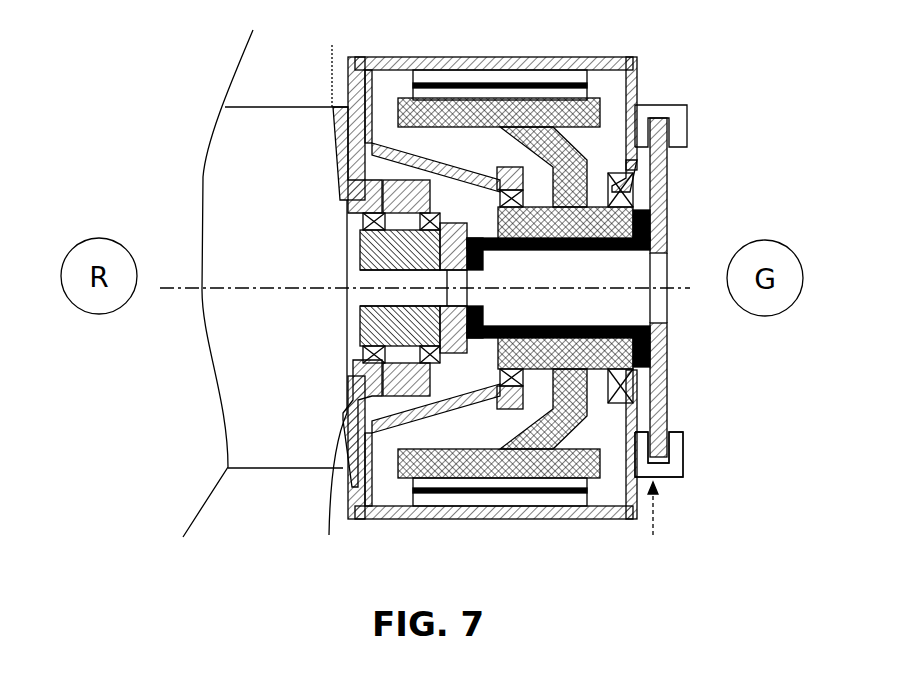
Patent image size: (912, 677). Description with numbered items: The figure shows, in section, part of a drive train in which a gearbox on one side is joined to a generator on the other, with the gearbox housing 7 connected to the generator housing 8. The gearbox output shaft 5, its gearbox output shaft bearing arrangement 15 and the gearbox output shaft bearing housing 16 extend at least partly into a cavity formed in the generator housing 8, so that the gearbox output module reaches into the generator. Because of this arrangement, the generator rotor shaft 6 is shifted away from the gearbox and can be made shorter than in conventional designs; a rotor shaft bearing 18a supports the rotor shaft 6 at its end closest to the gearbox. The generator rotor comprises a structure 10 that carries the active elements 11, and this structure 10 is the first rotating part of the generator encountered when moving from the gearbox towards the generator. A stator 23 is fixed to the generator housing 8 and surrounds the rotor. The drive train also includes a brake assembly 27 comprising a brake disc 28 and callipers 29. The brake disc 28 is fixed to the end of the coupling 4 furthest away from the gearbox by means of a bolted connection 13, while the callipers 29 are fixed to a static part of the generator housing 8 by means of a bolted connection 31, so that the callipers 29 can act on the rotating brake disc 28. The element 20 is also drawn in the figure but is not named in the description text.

The coupling 4 is at (620, 170).
The gearbox output shaft 5 is at (435, 220).
The rotor shaft 6 is at (658, 222).
The gearbox housing 7 is at (357, 178).
The generator housing 8 is at (617, 60).
The structure 10 is at (577, 185).
The active elements 11 is at (582, 97).
The bolted connection 13 is at (673, 362).
The gearbox output shaft bearing arrangement 15 is at (428, 205).
The gearbox output shaft bearing housing 16 is at (388, 232).
The rotor shaft bearing 18a is at (513, 190).
The shaft 20 is at (472, 238).
The stator 23 is at (567, 78).
The brake assembly 27 is at (657, 527).
The brake disc 28 is at (665, 388).
The callipers 29 is at (685, 447).
The bolted connection 31 is at (688, 113).